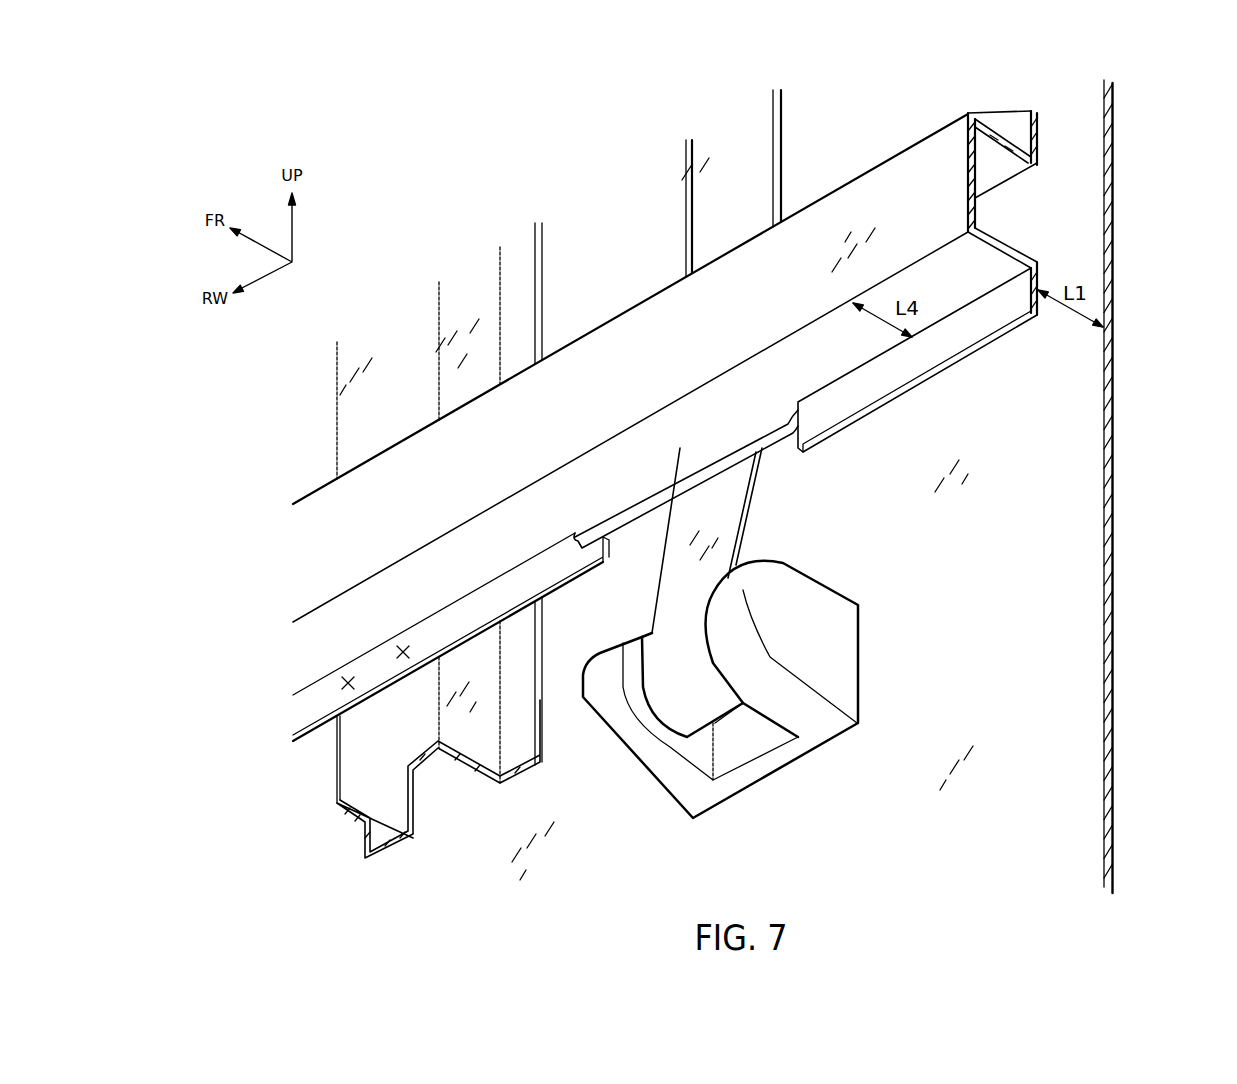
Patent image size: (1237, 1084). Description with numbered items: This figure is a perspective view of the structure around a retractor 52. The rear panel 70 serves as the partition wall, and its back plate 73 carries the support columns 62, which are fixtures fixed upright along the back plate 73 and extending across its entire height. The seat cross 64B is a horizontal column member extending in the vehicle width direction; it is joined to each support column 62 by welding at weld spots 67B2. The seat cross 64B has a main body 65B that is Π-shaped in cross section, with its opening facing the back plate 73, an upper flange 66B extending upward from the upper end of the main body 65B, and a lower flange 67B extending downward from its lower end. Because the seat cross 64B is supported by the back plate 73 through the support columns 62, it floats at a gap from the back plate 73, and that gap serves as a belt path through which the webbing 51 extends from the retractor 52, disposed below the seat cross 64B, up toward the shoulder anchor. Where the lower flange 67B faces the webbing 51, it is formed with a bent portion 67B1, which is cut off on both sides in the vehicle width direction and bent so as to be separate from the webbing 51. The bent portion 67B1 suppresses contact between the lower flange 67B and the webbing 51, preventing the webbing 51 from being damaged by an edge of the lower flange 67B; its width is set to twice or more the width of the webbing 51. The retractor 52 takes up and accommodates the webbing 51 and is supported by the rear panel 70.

The webbing 51 is at (695, 163).
The support column 62 is at (468, 297).
The seat cross 64B is at (838, 192).
The main body 65B is at (918, 163).
The upper flange 66B is at (1017, 132).
The lower flange 67B is at (988, 318).
The bent portion 67B1 is at (650, 503).
The weld spot 67B2 is at (348, 683).
The rear panel 70 is at (1113, 548).
The back plate 73 is at (1110, 217).
The retractor 52 is at (810, 647).